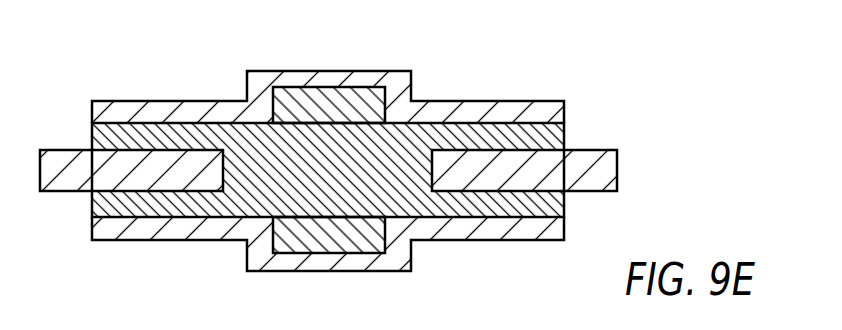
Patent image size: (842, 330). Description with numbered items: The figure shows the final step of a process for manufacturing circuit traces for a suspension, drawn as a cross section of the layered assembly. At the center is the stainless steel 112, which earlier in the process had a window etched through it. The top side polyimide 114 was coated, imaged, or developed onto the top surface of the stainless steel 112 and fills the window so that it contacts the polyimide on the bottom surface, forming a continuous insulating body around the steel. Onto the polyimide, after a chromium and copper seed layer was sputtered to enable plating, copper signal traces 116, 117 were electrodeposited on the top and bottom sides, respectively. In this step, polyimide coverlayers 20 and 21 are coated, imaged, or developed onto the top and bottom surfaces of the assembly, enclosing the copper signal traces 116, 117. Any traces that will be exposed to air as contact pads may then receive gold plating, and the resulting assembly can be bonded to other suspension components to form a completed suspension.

The polyimide coverlayer 20 is at (445, 101).
The polyimide coverlayer 21 is at (453, 240).
The stainless steel 112 is at (617, 171).
The top side polyimide 114 is at (505, 123).
The copper signal trace 116 is at (308, 93).
The copper signal trace 117 is at (298, 243).